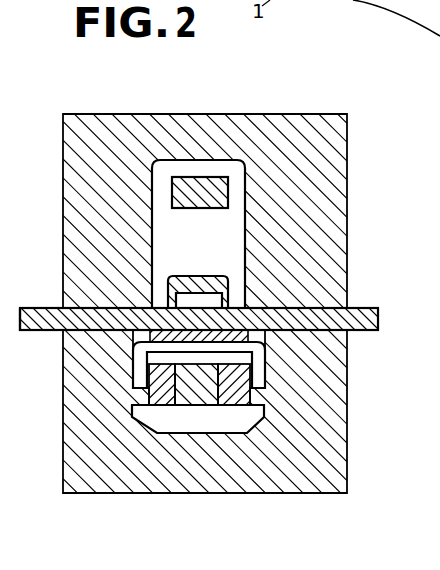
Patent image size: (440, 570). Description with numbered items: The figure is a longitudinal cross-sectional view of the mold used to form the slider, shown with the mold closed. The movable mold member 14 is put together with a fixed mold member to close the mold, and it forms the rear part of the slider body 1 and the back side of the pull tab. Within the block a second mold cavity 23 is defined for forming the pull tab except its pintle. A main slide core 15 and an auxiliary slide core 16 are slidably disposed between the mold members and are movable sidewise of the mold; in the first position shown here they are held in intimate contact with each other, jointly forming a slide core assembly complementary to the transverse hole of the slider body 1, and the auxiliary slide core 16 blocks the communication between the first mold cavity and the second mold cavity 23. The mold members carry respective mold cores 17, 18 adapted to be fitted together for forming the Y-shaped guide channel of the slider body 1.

The slider body 1 is at (264, 414).
The movable mold member 14 is at (305, 125).
The main slide core 15 is at (373, 308).
The auxiliary slide core 16 is at (40, 308).
The mold core 17 is at (165, 398).
The mold core 18 is at (200, 398).
The second mold cavity 23 is at (230, 240).